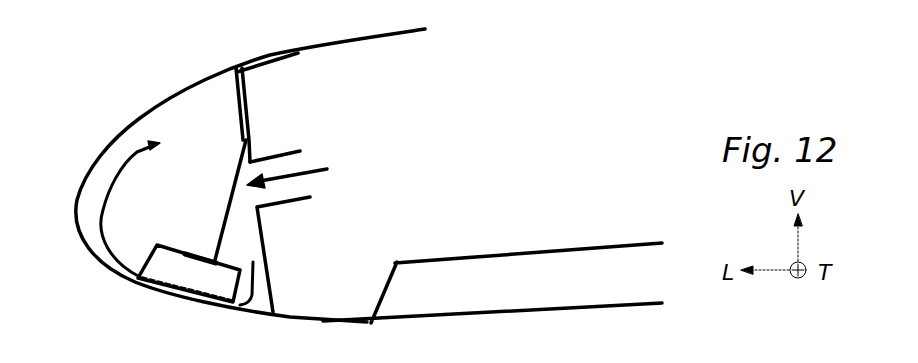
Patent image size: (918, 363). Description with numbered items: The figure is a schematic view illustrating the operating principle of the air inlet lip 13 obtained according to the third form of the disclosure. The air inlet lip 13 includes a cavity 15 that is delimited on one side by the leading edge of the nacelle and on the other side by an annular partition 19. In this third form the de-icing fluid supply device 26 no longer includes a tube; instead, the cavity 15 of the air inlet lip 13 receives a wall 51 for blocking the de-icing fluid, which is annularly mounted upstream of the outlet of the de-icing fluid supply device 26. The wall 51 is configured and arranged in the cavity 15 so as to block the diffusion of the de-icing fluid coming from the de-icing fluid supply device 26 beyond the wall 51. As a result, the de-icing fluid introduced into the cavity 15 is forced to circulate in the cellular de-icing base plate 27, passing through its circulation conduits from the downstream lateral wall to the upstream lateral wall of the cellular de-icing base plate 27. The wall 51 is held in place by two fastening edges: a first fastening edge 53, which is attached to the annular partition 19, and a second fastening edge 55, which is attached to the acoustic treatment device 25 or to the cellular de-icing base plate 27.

The air inlet lip 13 is at (137, 75).
The cavity 15 is at (204, 134).
The first fastening edge 53 is at (234, 117).
The de-icing fluid supply device 26 is at (274, 151).
The wall for blocking the de-icing fluid 51 is at (232, 191).
The acoustic treatment device 25 is at (167, 247).
The second fastening edge 55 is at (200, 254).
The annular partition 19 is at (268, 250).
The cellular de-icing base plate 27 is at (178, 302).